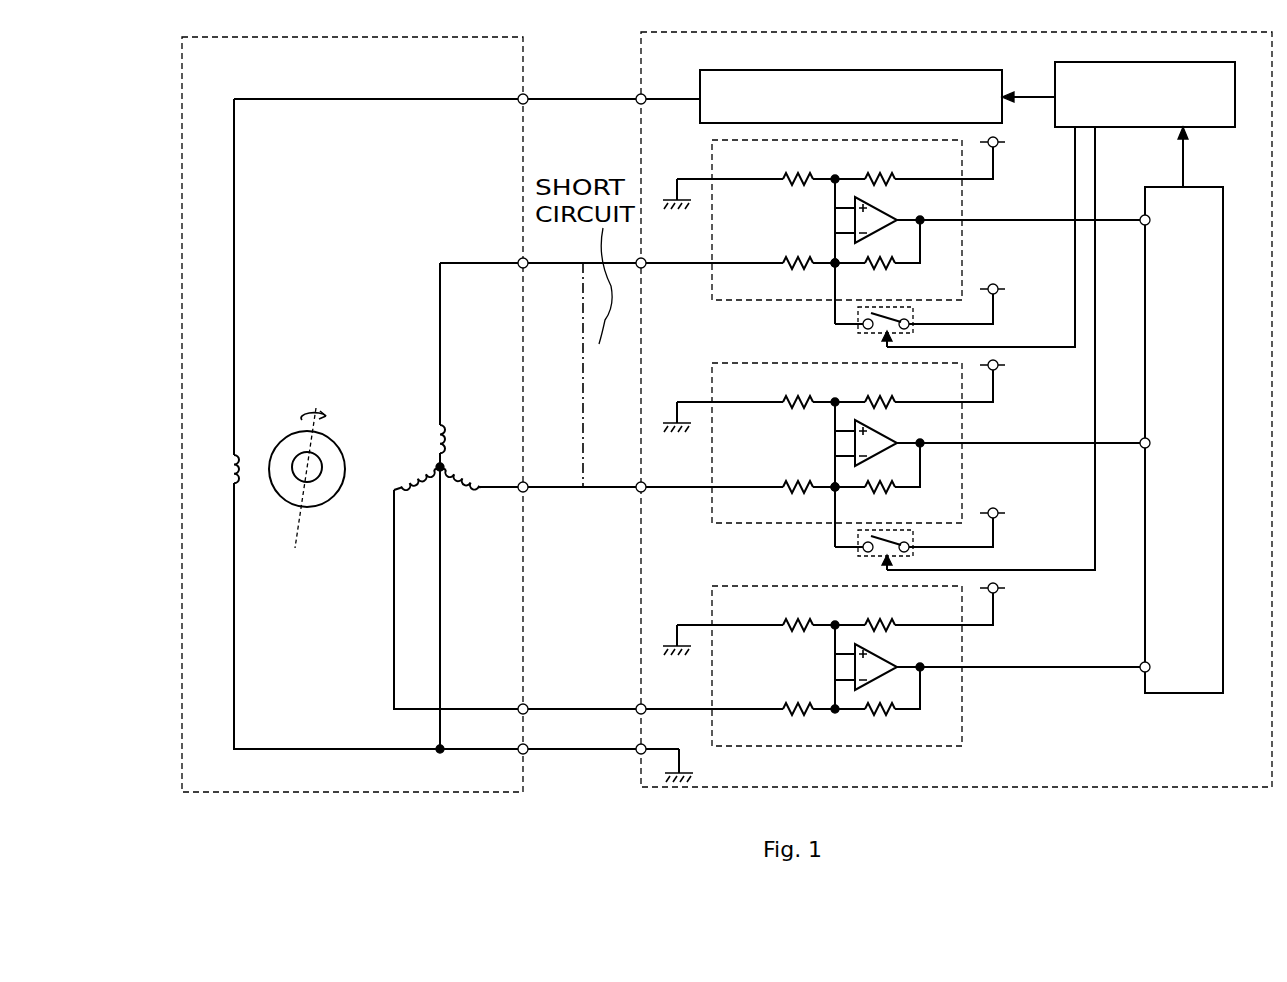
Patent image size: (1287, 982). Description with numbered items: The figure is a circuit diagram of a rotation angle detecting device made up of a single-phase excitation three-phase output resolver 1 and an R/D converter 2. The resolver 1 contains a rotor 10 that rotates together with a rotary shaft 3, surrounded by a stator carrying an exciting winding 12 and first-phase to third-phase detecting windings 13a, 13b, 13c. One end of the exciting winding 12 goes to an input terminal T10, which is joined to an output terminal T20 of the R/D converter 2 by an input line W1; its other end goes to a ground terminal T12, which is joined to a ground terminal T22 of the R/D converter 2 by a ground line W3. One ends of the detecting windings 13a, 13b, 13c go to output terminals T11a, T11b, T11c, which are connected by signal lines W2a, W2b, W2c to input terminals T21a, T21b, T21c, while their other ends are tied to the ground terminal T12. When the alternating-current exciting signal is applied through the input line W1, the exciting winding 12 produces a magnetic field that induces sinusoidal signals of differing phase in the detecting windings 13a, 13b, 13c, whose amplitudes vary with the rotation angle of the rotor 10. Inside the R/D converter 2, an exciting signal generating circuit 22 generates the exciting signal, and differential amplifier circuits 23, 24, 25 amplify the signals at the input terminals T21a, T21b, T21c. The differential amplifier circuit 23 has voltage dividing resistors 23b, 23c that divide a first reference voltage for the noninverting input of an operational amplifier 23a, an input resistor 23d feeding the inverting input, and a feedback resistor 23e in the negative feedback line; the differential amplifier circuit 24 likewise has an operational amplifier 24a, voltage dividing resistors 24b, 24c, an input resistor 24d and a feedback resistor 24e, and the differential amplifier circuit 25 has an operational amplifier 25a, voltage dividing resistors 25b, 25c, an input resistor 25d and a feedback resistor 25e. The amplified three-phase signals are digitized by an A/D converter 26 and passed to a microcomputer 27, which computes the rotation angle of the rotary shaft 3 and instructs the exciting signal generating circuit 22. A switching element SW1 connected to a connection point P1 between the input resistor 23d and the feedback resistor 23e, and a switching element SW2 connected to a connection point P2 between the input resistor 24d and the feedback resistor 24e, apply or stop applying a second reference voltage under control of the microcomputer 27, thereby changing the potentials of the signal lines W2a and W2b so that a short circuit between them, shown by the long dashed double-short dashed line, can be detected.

The resolver 1 is at (524, 57).
The R/D converter 2 is at (640, 56).
The rotary shaft 3 is at (296, 458).
The rotor 10 is at (349, 433).
The exciting winding 12 is at (228, 472).
The first-phase detecting winding 13a is at (430, 432).
The second-phase detecting winding 13b is at (478, 460).
The third-phase detecting winding 13c is at (405, 482).
The exciting signal generating circuit 22 is at (761, 70).
The differential amplifier circuit 23 is at (710, 241).
The operational amplifier 23a is at (886, 203).
The voltage dividing resistor 23b is at (796, 176).
The voltage dividing resistor 23c is at (878, 176).
The input resistor 23d is at (798, 270).
The feedback resistor 23e is at (880, 270).
The differential amplifier circuit 24 is at (710, 464).
The operational amplifier 24a is at (886, 426).
The voltage dividing resistor 24b is at (796, 399).
The voltage dividing resistor 24c is at (878, 399).
The input resistor 24d is at (798, 494).
The feedback resistor 24e is at (880, 494).
The differential amplifier circuit 25 is at (710, 599).
The operational amplifier 25a is at (886, 650).
The voltage dividing resistor 25b is at (796, 622).
The voltage dividing resistor 25c is at (878, 622).
The input resistor 25d is at (798, 717).
The feedback resistor 25e is at (880, 717).
The A/D converter 26 is at (1208, 189).
The microcomputer 27 is at (1196, 63).
The connection point P1 is at (834, 261).
The connection point P2 is at (834, 485).
The switching element SW1 is at (843, 332).
The switching element SW2 is at (843, 555).
The input terminal T10 is at (520, 101).
The output terminal T11a is at (518, 263).
The output terminal T11b is at (518, 487).
The output terminal T11c is at (516, 709).
The ground terminal T12 is at (518, 749).
The output terminal T20 is at (645, 102).
The input terminal T21a is at (645, 266).
The input terminal T21b is at (645, 490).
The input terminal T21c is at (678, 694).
The ground terminal T22 is at (646, 749).
The input line W1 is at (570, 104).
The first-phase signal line W2a is at (550, 268).
The second-phase signal line W2b is at (570, 492).
The third-phase signal line W2c is at (574, 706).
The ground line W3 is at (578, 756).